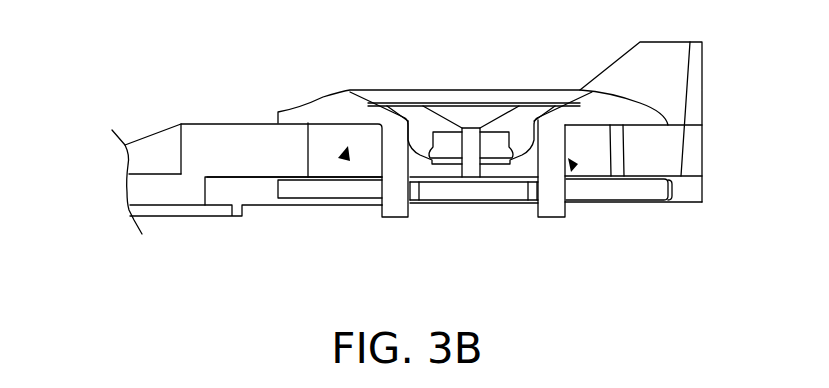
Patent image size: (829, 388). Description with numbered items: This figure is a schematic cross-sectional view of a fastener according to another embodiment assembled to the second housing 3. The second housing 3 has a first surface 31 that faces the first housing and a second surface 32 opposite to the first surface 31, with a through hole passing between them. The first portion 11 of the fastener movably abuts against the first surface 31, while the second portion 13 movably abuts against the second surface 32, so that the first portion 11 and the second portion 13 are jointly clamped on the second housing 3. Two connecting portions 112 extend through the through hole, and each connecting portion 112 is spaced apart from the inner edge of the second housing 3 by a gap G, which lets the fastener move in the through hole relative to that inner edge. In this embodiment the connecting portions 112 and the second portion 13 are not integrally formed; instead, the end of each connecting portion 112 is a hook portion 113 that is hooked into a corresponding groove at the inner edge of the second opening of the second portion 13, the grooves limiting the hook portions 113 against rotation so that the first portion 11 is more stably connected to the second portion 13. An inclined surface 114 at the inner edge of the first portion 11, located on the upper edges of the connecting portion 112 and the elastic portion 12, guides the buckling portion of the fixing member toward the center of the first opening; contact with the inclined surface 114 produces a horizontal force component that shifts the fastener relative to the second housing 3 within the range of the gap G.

The second housing 3 is at (150, 195).
The first surface 31 is at (228, 123).
The second surface 32 is at (228, 180).
The first portion 11 is at (354, 113).
The inclined surface 114 is at (401, 99).
The elastic portion 12 is at (447, 113).
The hook portion 113 is at (382, 207).
The second portion 13 is at (297, 193).
The connecting portion 112 is at (550, 160).
The gap G is at (345, 160).